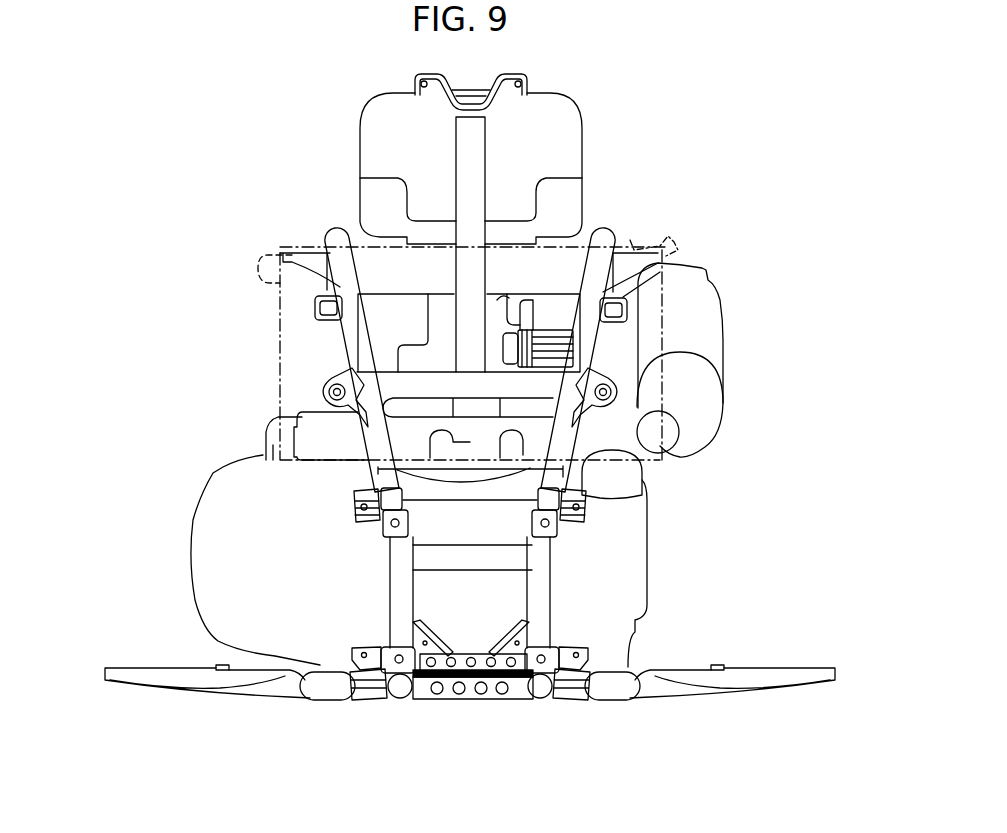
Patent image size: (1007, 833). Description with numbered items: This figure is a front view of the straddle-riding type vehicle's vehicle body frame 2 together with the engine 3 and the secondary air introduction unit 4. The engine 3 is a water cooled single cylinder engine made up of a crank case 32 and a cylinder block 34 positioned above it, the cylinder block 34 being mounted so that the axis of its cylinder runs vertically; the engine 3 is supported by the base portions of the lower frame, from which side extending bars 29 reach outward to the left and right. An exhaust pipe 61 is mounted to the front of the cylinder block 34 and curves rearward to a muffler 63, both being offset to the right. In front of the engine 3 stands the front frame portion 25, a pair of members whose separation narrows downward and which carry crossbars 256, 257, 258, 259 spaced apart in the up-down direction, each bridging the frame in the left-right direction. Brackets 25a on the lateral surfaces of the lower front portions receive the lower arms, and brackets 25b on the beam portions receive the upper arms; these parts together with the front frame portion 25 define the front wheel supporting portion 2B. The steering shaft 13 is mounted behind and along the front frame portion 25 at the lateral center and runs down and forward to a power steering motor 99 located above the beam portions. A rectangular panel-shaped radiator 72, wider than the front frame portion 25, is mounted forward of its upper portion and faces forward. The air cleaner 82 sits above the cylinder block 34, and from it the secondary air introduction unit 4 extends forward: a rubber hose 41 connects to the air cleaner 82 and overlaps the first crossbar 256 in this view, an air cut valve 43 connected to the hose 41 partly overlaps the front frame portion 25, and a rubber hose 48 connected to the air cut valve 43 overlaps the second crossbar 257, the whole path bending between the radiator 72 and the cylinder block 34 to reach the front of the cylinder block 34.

The vehicle body frame 2 is at (308, 722).
The front wheel supporting portion 2B is at (290, 214).
The engine 3 is at (212, 560).
The secondary air introduction unit 4 is at (531, 309).
The steering shaft 13 is at (470, 148).
The front frame portion 25 is at (340, 270).
The brackets 25a is at (568, 678).
The brackets 25b is at (323, 393).
The side extending bars 29 is at (147, 678).
The crank case 32 is at (212, 537).
The cylinder block 34 is at (417, 353).
The rubber hose 41 is at (497, 309).
The air cut valve 43 is at (565, 338).
The rubber hose 48 is at (513, 364).
The exhaust pipe 61 is at (618, 492).
The muffler 63 is at (707, 336).
The radiator 72 is at (278, 350).
The air cleaner 82 is at (548, 118).
The power steering motor 99 is at (313, 438).
The first crossbar 256 is at (370, 267).
The second crossbar 257 is at (367, 430).
The crossbar 258 is at (513, 490).
The crossbar 259 is at (507, 558).